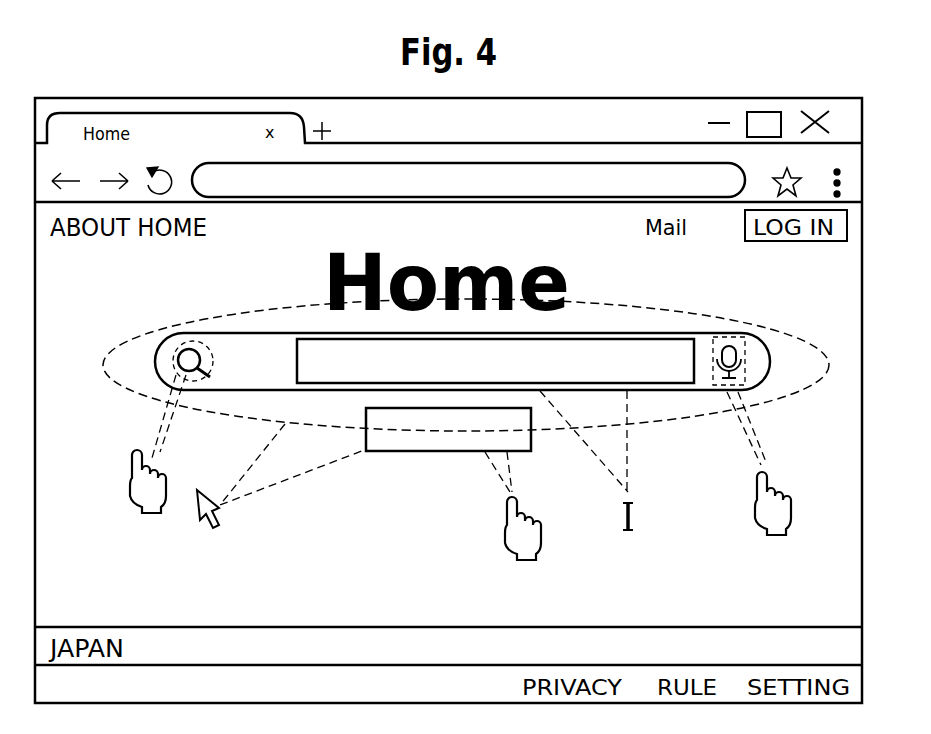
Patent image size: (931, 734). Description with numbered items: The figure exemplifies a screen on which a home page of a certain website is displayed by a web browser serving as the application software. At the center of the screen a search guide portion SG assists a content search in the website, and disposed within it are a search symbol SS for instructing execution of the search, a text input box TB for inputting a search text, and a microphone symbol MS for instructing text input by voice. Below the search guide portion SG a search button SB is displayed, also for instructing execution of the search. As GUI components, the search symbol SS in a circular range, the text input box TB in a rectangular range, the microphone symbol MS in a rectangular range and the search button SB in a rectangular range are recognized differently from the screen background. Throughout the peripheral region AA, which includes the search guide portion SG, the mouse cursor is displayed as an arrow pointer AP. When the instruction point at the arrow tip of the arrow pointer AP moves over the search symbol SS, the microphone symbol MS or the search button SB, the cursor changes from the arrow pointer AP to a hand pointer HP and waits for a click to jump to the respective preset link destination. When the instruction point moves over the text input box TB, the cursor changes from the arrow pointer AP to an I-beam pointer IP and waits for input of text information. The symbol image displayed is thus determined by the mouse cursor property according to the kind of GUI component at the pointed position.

The peripheral region AA is at (284, 318).
The search symbol SS is at (185, 350).
The search guide portion SG is at (310, 391).
The text input box TB is at (643, 355).
The microphone symbol MS is at (725, 345).
The search button SB is at (413, 443).
The hand pointer HP is at (150, 513).
The arrow pointer AP is at (215, 522).
The I-beam pointer IP is at (630, 532).